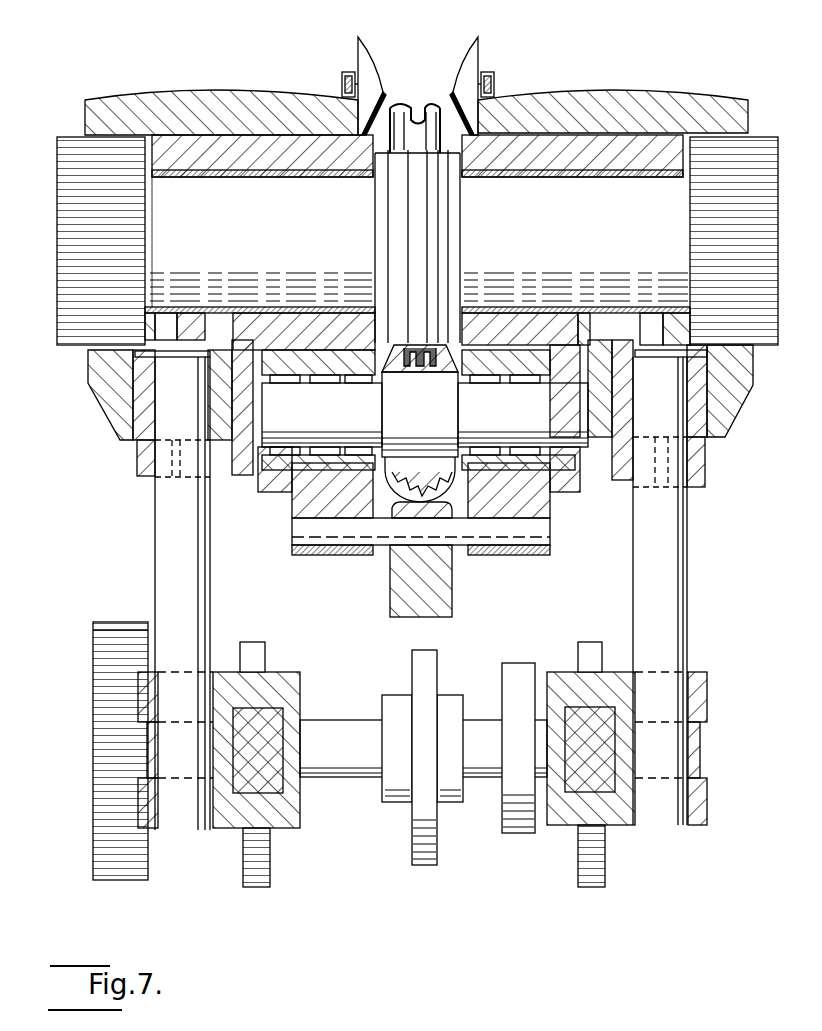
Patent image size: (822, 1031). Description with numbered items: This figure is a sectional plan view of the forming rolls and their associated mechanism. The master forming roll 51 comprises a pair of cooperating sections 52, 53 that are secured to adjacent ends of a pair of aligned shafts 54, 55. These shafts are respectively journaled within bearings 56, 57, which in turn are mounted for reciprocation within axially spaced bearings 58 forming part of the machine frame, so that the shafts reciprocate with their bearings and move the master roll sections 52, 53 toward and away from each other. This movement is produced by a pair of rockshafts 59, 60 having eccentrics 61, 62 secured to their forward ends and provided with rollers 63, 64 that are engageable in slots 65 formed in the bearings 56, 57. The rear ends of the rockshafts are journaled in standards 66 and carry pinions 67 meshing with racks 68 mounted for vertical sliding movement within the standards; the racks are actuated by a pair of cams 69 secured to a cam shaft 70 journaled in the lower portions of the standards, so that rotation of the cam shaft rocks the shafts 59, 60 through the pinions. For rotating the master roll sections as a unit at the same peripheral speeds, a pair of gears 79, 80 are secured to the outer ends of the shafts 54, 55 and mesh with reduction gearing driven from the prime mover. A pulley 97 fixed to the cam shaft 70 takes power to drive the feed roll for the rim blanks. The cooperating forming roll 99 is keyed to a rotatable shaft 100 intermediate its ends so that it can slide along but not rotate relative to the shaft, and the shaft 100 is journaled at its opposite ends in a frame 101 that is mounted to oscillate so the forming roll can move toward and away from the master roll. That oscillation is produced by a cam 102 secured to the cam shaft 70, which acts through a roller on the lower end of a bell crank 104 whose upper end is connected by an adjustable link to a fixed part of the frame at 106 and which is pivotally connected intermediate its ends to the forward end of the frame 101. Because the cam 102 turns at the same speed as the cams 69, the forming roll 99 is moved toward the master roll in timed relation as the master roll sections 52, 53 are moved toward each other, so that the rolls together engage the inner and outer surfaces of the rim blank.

The master forming roll 51 is at (415, 182).
The master roll section 52 is at (372, 88).
The master roll section 53 is at (464, 88).
The shaft 54 is at (282, 190).
The shaft 55 is at (520, 185).
The bearing 56 is at (232, 140).
The bearing 57 is at (620, 133).
The bearings 58 is at (152, 100).
The rockshaft 59 is at (160, 563).
The rockshaft 60 is at (683, 556).
The eccentric 61 is at (228, 480).
The eccentric 62 is at (620, 485).
The roller 63 is at (250, 325).
The roller 64 is at (650, 330).
The slot 65 is at (170, 335).
The standard 66 is at (300, 830).
The pinion 67 is at (156, 770).
The rack 68 is at (300, 695).
The cam 69 is at (262, 888).
The cam shaft 70 is at (355, 776).
The gear 79 is at (72, 322).
The gear 80 is at (748, 146).
The pulley 97 is at (512, 833).
The forming roll 99 is at (396, 486).
The shaft 100 is at (425, 401).
The frame 101 is at (300, 500).
The cam 102 is at (425, 866).
The bell crank 104 is at (445, 598).
The fixed frame part 106 is at (548, 537).